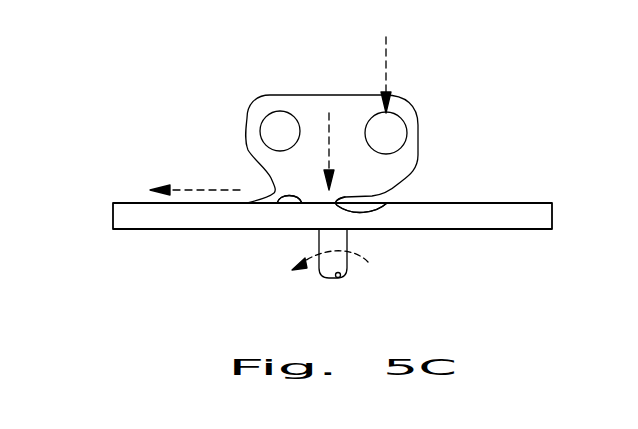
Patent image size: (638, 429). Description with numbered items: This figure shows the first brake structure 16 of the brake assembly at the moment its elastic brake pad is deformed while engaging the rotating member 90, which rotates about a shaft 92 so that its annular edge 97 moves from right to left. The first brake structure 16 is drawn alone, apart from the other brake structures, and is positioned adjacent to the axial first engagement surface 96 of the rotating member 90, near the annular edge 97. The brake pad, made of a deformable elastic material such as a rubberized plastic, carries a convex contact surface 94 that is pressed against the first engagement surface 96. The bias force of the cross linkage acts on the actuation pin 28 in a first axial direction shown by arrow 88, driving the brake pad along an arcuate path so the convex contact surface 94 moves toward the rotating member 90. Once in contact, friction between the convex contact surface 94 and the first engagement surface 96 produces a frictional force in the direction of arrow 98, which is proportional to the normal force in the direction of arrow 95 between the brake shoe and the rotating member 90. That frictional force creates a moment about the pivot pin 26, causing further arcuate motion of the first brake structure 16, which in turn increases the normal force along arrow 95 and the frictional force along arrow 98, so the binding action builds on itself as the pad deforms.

The first brake structure 16 is at (246, 112).
The pivot pin 26 is at (267, 130).
The actuation pin 28 is at (394, 131).
The arrow 88 is at (388, 68).
The rotating member 90 is at (130, 237).
The shaft 92 is at (340, 262).
The convex contact surface 94 is at (383, 204).
The arrow 95 is at (336, 156).
The first engagement surface 96 is at (278, 203).
The annular edge 97 is at (490, 220).
The arrow 98 is at (195, 190).